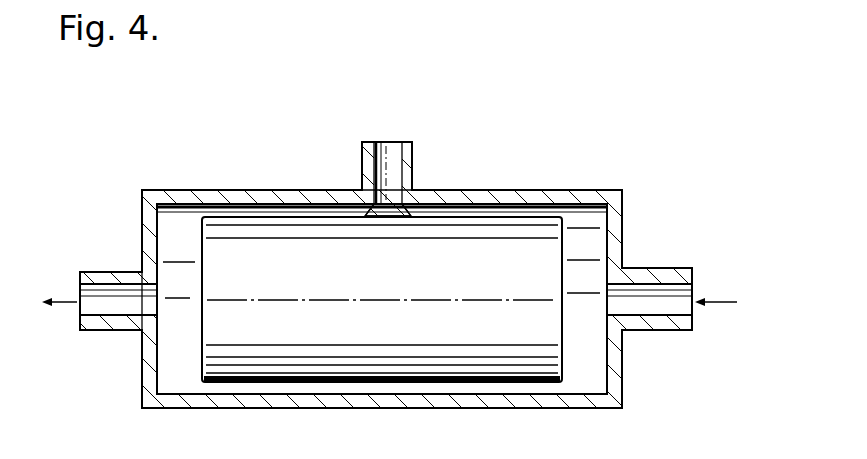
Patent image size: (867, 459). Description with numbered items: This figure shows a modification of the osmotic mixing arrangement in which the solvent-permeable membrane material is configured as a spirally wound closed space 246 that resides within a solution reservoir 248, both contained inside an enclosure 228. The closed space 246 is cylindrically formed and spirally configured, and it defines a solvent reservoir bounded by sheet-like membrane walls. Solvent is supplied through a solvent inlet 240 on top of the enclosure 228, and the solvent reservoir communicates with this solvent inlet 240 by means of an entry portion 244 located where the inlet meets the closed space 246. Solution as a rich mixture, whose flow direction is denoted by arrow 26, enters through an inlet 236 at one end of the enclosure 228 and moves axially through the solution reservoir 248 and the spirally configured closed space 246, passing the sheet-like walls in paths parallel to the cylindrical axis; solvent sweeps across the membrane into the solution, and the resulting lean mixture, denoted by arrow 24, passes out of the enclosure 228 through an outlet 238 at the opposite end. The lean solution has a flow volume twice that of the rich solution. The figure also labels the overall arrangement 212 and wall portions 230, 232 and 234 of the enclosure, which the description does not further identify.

The filter assembly 212 is at (252, 132).
The enclosure 228 is at (298, 188).
The housing 230 is at (622, 196).
The housing end wall 232 is at (142, 226).
The housing corner 234 is at (143, 190).
The inlet 236 is at (690, 268).
The outlet 238 is at (82, 272).
The solvent inlet 240 is at (410, 153).
The entry portion 244 is at (406, 202).
The spirally wound closed space 246 is at (258, 388).
The solution reservoir 248 is at (593, 382).
The arrow denoting lean mixture solution flow 24 is at (66, 300).
The arrow denoting rich mixture solution flow 26 is at (724, 301).